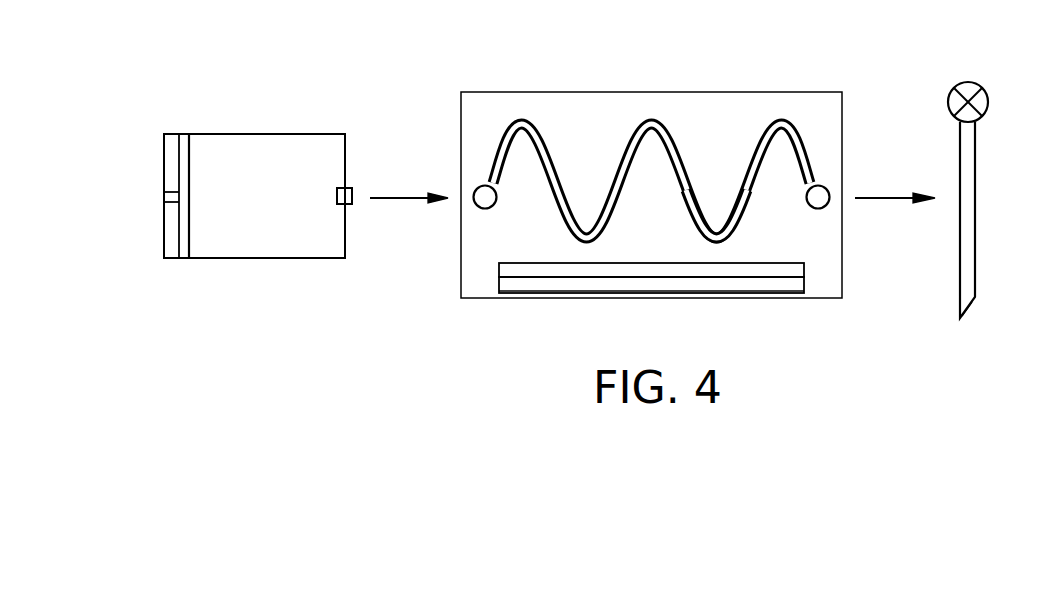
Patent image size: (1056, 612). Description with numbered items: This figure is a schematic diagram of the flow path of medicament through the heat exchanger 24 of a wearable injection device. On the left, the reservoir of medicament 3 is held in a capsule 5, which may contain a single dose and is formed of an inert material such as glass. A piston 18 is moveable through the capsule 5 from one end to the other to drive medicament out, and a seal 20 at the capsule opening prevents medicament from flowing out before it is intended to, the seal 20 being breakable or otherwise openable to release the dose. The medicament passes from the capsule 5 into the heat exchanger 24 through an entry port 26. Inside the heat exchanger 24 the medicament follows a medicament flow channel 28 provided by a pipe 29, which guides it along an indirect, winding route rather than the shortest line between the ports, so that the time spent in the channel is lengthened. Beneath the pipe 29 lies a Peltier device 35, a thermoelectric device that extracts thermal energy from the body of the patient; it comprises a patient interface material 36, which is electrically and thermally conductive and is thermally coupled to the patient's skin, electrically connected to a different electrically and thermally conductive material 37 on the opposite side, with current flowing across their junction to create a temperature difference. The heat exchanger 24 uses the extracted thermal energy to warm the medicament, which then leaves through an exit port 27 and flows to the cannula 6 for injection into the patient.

The reservoir of medicament 3 is at (260, 208).
The capsule 5 is at (278, 184).
The cannula 6 is at (977, 193).
The piston 18 is at (190, 242).
The seal 20 is at (350, 188).
The heat exchanger 24 is at (745, 92).
The entry port 26 is at (477, 187).
The exit port 27 is at (828, 187).
The medicament flow channel 28 is at (716, 244).
The pipe 29 is at (542, 127).
The Peltier device 35 is at (652, 292).
The patient interface material 36 is at (499, 285).
The electrically and thermally conductive material 37 is at (499, 267).